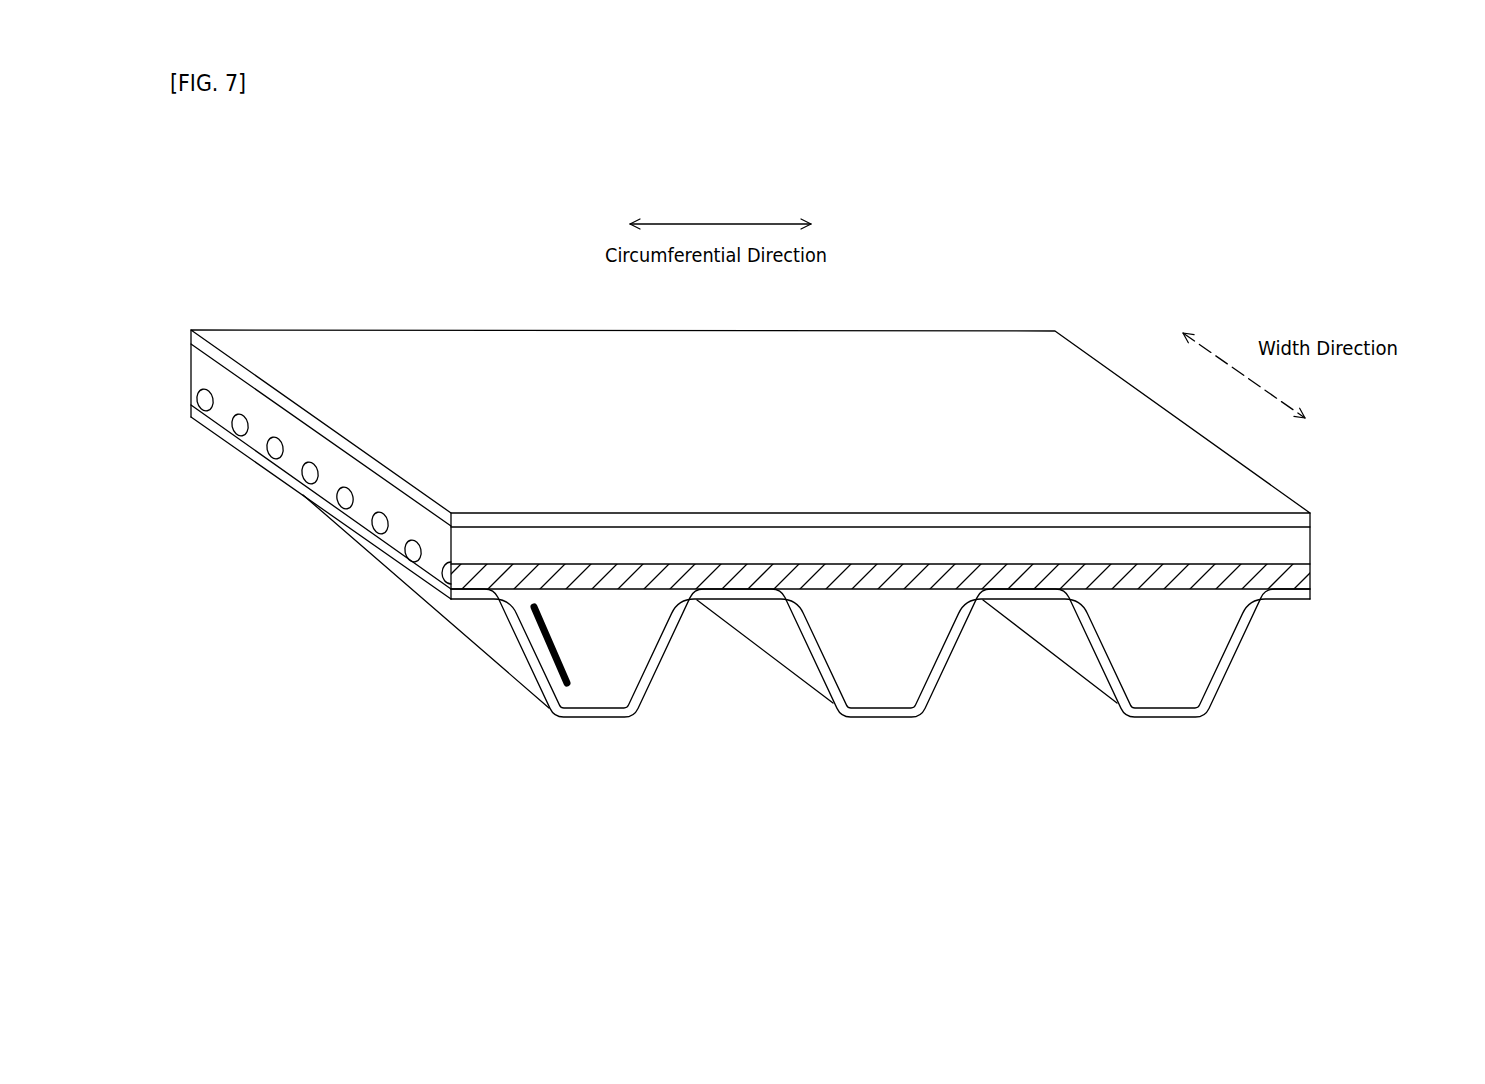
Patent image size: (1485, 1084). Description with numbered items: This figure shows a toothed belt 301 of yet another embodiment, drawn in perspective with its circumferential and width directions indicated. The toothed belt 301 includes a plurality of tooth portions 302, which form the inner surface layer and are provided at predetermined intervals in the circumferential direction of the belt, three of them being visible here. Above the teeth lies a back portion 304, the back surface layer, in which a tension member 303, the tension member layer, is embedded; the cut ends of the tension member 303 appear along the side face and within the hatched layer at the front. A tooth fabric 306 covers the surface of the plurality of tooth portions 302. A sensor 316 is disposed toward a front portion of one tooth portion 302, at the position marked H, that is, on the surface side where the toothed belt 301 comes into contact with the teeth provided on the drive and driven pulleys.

The toothed belt 301 is at (378, 257).
The tooth portion 302 is at (593, 677).
The tension member 303 is at (445, 581).
The back portion 304 is at (656, 545).
The tooth fabric 306 is at (932, 677).
The sensor 316 is at (550, 647).